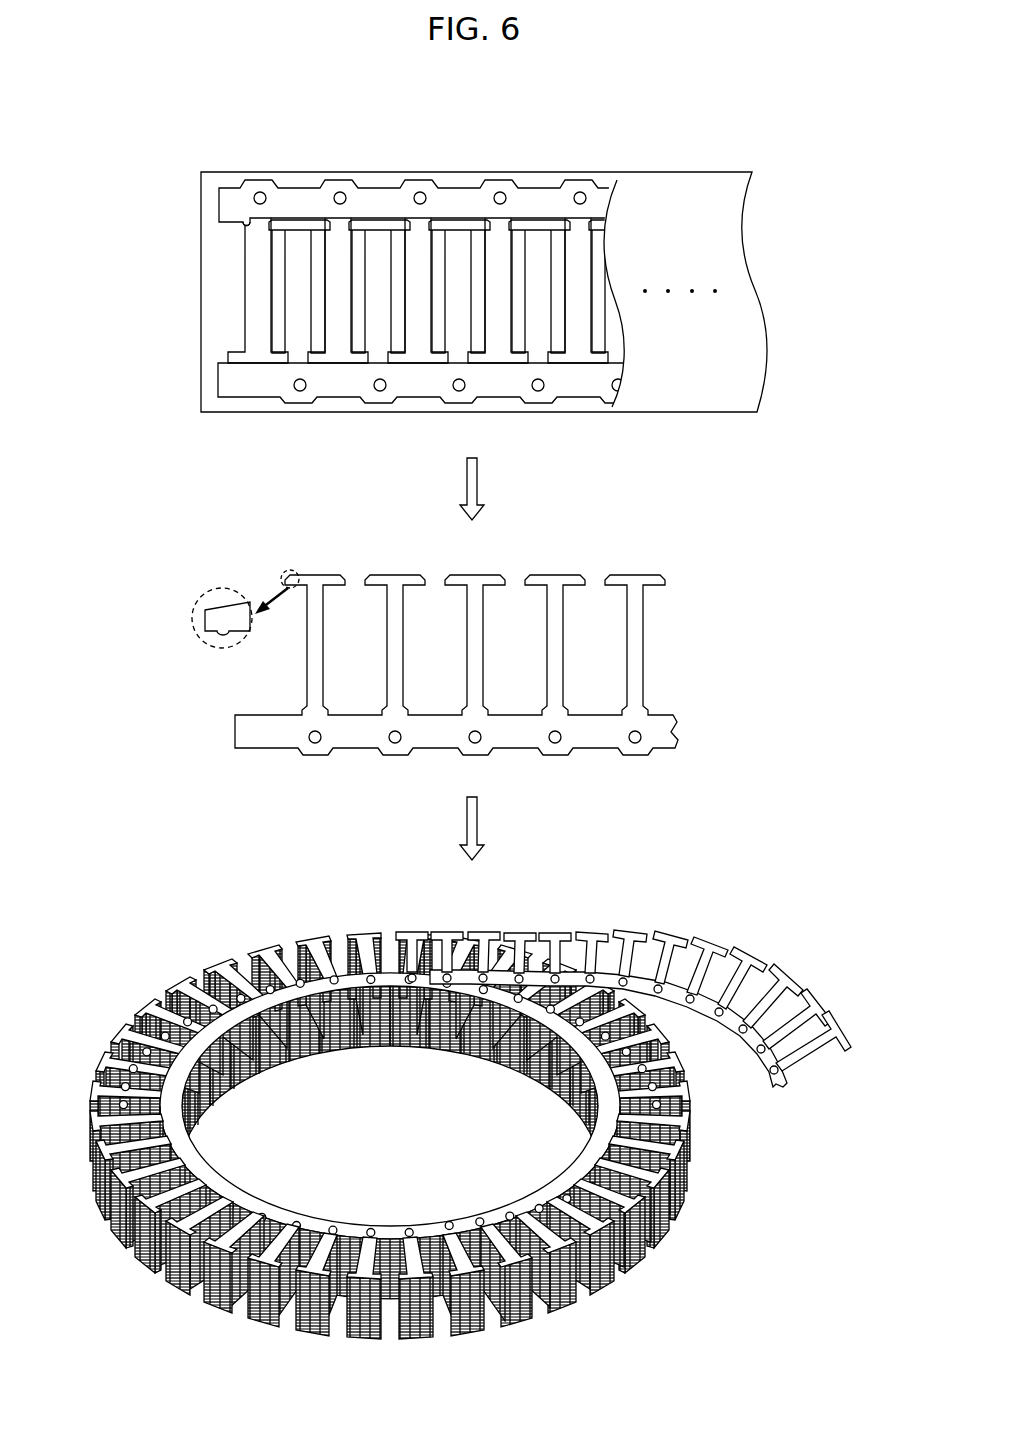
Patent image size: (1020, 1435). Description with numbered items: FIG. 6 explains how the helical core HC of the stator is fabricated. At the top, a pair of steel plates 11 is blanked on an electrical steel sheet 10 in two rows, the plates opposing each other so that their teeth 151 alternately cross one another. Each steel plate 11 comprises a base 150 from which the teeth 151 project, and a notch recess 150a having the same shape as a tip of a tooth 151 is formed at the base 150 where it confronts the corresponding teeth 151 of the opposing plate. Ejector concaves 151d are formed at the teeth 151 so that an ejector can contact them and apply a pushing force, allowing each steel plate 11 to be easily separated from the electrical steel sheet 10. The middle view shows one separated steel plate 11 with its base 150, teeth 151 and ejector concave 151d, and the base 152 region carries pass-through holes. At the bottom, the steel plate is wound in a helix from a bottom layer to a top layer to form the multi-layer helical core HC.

The electrical steel sheet 10 is at (200, 320).
The steel plate 11 is at (600, 181).
The base 150 is at (439, 290).
The notch recess 150a is at (240, 222).
The teeth 151 is at (458, 240).
The ejector concave 151d is at (317, 230).
The yoke 152 is at (378, 188).
The helical core HC is at (206, 932).